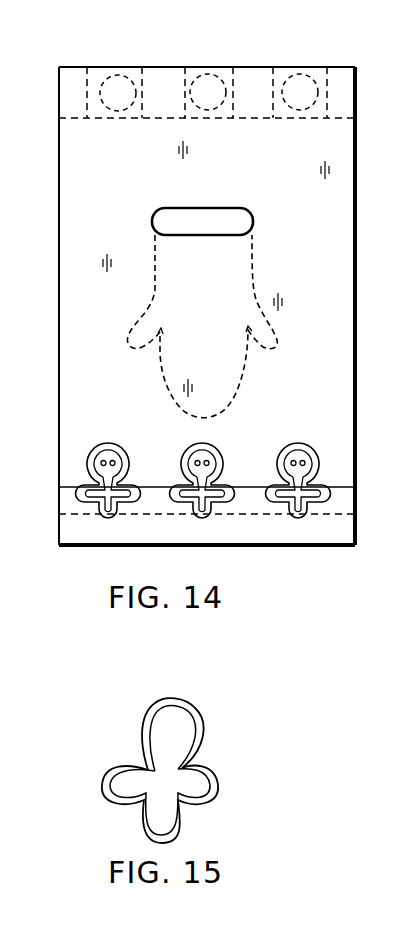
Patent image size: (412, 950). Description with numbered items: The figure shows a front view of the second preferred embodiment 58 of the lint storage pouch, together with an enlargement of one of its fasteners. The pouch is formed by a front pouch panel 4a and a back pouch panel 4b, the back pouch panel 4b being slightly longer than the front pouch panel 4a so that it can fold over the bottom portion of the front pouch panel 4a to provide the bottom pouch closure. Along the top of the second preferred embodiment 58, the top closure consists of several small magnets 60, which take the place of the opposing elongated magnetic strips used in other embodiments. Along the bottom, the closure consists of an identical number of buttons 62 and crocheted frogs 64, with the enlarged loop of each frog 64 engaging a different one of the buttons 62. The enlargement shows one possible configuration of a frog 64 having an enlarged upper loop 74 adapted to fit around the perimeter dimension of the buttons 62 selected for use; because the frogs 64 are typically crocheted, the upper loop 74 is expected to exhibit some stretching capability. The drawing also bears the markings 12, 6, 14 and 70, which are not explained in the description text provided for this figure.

In FIG. 14, the second preferred embodiment 58 is at (360, 64).
In FIG. 14, the front pouch panel 4a is at (347, 252).
In FIG. 14, the back pouch panel 4b is at (317, 532).
In FIG. 14, the fold line 12 is at (304, 119).
In FIG. 14, the small magnets 60 is at (287, 78).
In FIG. 14, the slot 6 is at (253, 213).
In FIG. 14, the glove 14 is at (247, 262).
In FIG. 14, the crocheted frogs 64 is at (234, 465).
In FIG. 15, the crocheted frogs 64 is at (149, 754).
In FIG. 14, the upper loop 74 is at (108, 443).
In FIG. 15, the upper loop 74 is at (172, 700).
In FIG. 14, the buttons 62 is at (306, 452).
In FIG. 15, the clip portion 70 is at (406, 773).